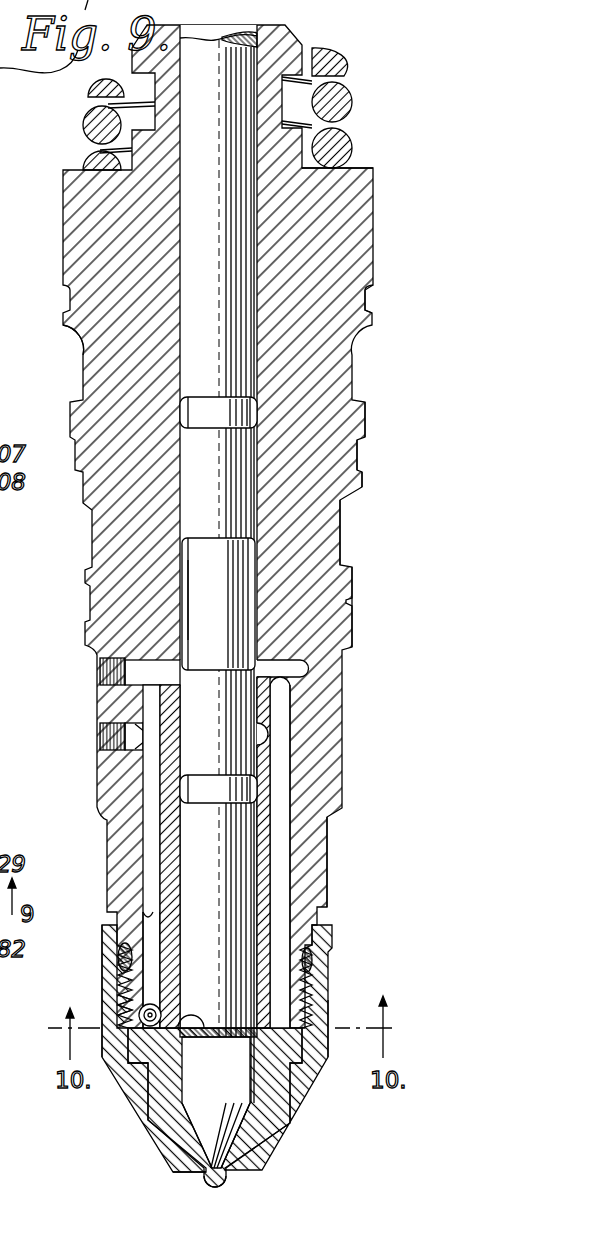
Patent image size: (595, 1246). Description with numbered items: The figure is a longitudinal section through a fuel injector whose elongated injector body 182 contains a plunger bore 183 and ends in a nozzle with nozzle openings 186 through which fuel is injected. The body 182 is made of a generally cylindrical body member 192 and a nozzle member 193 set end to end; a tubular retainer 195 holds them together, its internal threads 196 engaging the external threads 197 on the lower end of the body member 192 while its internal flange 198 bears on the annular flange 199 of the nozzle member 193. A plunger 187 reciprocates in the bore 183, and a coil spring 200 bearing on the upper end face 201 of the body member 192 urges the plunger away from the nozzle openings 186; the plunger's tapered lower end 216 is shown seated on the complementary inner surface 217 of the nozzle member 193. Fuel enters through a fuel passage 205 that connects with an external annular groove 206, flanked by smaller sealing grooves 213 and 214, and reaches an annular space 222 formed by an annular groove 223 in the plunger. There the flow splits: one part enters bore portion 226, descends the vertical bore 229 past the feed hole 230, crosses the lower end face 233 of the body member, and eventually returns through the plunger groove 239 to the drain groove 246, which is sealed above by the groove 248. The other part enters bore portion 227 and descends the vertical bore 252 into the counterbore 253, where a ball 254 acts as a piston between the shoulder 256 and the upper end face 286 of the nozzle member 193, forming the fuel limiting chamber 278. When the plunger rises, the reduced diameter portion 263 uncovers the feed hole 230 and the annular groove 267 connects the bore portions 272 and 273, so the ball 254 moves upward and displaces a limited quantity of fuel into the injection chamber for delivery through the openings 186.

The injector body 182 is at (367, 410).
The plunger bore 183 is at (178, 348).
The nozzle openings 186 is at (212, 1173).
The plunger 187 is at (261, 883).
The body member 192 is at (103, 535).
The nozzle member 193 is at (272, 1132).
The tubular retainer 195 is at (318, 983).
The internal threads 196 is at (125, 1010).
The external threads 197 is at (125, 992).
The internal flange 198 is at (147, 1063).
The annular flange 199 is at (127, 1047).
The coil spring 200 is at (350, 60).
The upper end face 201 is at (352, 168).
The fuel passage 205 is at (300, 769).
The external annular groove 206 is at (340, 532).
The annular groove 213 is at (355, 612).
The annular groove 214 is at (360, 460).
The tapered lower end 216 is at (207, 1120).
The inner surface 217 is at (173, 1167).
The annular space 222 is at (180, 568).
The annular groove 223 is at (188, 603).
The transverse bore portion 226 is at (298, 668).
The transverse bore portion 227 is at (113, 668).
The vertical bore 229 is at (290, 808).
The feed hole 230 is at (257, 999).
The lower end face 233 is at (305, 1046).
The annular groove 239 is at (238, 397).
The groove 246 is at (83, 388).
The groove 248 is at (368, 302).
The vertical bore 252 is at (145, 797).
The counterbore 253 is at (140, 922).
The ball 254 is at (172, 1001).
The shoulder 256 is at (160, 928).
The reduced diameter portion 263 is at (232, 1096).
The annular groove 267 is at (184, 800).
The transverse bore portion 272 is at (257, 730).
The transverse bore portion 273 is at (170, 740).
The fuel limiting chamber 278 is at (148, 958).
The upper end face 286 is at (218, 1047).